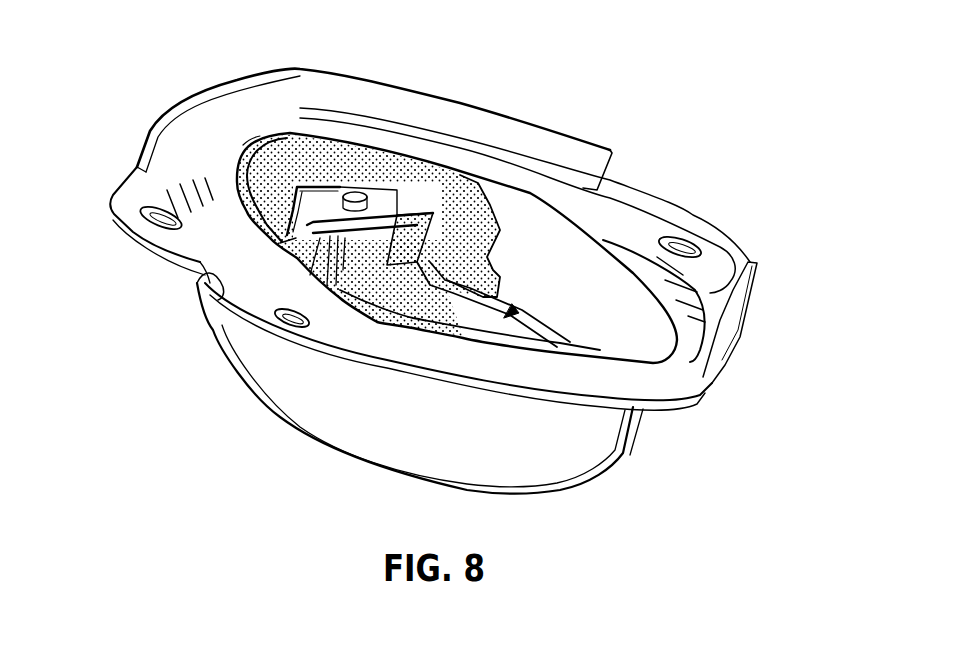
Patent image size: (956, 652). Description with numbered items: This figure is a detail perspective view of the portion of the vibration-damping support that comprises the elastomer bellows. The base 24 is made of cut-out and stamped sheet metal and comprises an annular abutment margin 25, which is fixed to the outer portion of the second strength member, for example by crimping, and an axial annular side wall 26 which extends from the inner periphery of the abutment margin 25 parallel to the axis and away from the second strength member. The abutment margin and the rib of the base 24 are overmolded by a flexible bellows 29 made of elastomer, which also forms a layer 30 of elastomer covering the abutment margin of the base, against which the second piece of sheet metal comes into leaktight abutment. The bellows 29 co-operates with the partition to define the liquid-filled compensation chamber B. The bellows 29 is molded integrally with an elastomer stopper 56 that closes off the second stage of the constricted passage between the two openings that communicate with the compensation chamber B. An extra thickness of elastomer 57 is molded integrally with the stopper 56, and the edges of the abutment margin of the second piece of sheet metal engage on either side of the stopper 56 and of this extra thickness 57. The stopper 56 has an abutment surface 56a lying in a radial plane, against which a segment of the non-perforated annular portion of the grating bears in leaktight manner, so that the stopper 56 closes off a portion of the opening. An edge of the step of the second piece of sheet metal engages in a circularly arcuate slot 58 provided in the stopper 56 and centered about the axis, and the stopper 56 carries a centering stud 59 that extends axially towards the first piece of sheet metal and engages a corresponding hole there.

The base 24 is at (683, 380).
The annular abutment margin 25 is at (727, 262).
The axial annular side wall 26 is at (260, 357).
The flexible bellows 29 is at (510, 317).
The layer of elastomer 30 is at (547, 340).
The elastomer stopper 56 is at (400, 197).
The abutment surface 56a is at (330, 226).
The extra thickness of elastomer 57 is at (607, 153).
The circularly arcuate slot 58 is at (290, 238).
The centering stud 59 is at (352, 212).
The compensation chamber B is at (510, 314).